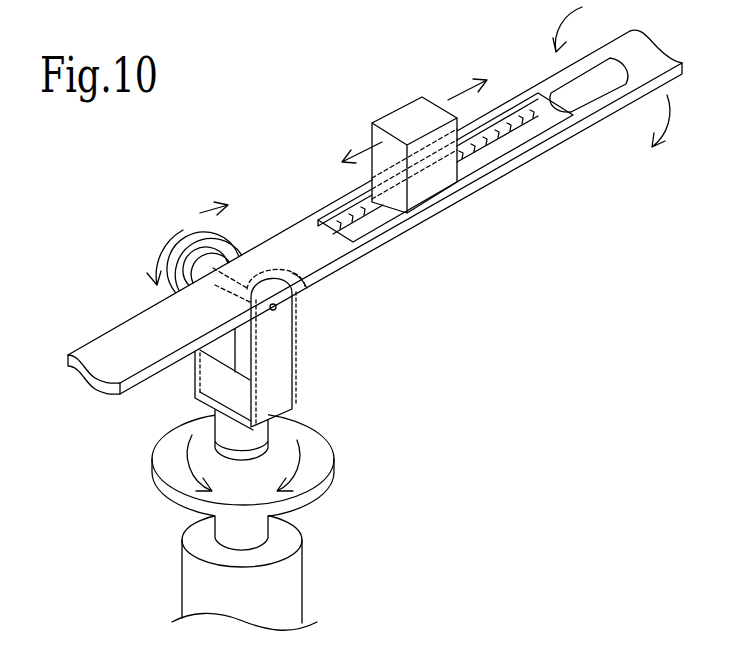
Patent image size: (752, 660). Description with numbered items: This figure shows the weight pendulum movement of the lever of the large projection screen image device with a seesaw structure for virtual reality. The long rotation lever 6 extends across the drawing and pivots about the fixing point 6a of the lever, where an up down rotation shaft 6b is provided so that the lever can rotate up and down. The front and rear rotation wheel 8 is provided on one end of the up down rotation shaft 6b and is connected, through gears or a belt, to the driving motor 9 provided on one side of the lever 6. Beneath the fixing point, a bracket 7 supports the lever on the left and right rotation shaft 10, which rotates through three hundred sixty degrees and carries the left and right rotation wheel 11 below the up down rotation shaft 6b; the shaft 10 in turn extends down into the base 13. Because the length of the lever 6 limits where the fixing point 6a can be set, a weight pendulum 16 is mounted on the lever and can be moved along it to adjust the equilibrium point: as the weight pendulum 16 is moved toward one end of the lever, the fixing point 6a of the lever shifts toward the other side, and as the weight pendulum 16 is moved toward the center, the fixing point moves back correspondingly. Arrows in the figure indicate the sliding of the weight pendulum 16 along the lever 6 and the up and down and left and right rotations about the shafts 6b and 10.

The lever 6 is at (128, 338).
The fixing point of the lever 6a is at (303, 278).
The up down rotation shaft 6b is at (278, 306).
The bracket 7 is at (284, 346).
The front and rear rotation wheel 8 is at (215, 240).
The driving motor 9 is at (598, 75).
The left and right rotation shaft 10 is at (264, 440).
The left and right rotation wheel 11 is at (165, 450).
The base cylinder 13 is at (193, 578).
The weight pendulum 16 is at (402, 118).